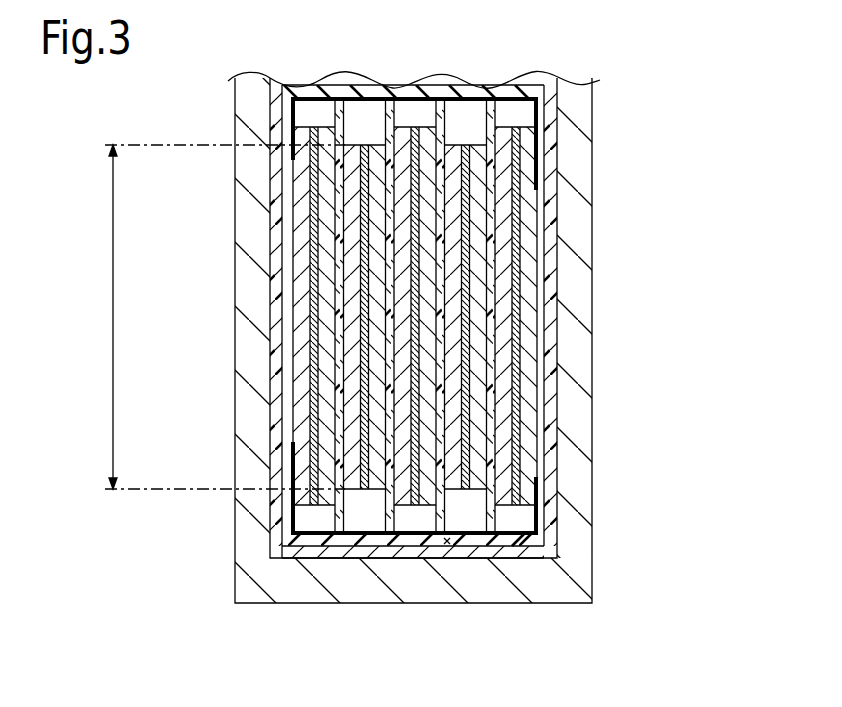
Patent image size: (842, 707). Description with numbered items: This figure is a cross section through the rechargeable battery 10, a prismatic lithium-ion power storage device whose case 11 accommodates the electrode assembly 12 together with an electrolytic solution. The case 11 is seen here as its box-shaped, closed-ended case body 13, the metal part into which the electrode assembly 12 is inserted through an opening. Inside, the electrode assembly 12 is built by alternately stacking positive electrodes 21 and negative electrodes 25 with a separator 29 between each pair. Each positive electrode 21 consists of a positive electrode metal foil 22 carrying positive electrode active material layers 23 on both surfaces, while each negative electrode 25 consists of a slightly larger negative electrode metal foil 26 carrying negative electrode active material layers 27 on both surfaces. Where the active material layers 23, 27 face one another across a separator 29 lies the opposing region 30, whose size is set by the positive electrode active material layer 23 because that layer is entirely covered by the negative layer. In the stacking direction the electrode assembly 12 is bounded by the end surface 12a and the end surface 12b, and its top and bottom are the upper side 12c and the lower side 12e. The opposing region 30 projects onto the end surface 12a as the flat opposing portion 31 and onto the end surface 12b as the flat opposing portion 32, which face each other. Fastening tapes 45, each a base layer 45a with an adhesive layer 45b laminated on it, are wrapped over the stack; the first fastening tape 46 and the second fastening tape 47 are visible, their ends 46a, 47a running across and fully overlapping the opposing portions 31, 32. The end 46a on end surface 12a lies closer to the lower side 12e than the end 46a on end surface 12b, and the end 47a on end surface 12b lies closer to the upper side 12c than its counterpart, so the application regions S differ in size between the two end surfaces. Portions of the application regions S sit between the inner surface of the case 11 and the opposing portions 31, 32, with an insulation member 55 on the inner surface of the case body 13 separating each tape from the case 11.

The rechargeable battery 10 is at (173, 586).
The case 11 is at (237, 404).
The electrode assembly 12 is at (369, 360).
The end surface 12a is at (538, 308).
The end surface 12b is at (293, 348).
The upper side 12c is at (488, 94).
The lower side 12e is at (426, 553).
The case body 13 is at (278, 554).
The positive electrode 21 is at (387, 386).
The positive electrode metal foil 22 is at (364, 490).
The positive electrode active material layer 23 is at (352, 490).
The negative electrode 25 is at (311, 386).
The negative electrode metal foil 26 is at (314, 506).
The negative electrode active material layer 27 is at (299, 506).
The separator 29 is at (340, 534).
The opposing region 30 is at (212, 317).
The opposing portion 31 is at (545, 375).
The opposing portion 32 is at (281, 291).
The fastening tape 45 is at (426, 603).
The base layer 45a is at (483, 540).
The adhesive layer 45b is at (519, 538).
The first fastening tape 46 is at (418, 130).
The end 46a is at (290, 165).
The second fastening tape 47 is at (415, 552).
The end 47a is at (292, 440).
The insulation member 55 is at (283, 557).
The application region S is at (448, 545).